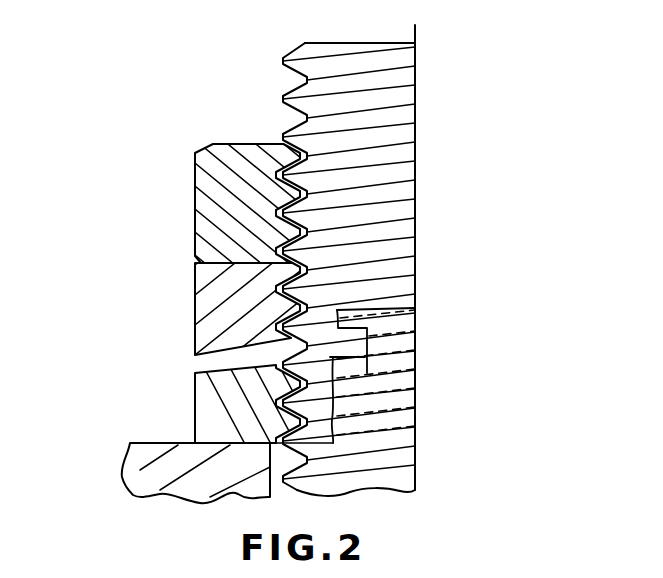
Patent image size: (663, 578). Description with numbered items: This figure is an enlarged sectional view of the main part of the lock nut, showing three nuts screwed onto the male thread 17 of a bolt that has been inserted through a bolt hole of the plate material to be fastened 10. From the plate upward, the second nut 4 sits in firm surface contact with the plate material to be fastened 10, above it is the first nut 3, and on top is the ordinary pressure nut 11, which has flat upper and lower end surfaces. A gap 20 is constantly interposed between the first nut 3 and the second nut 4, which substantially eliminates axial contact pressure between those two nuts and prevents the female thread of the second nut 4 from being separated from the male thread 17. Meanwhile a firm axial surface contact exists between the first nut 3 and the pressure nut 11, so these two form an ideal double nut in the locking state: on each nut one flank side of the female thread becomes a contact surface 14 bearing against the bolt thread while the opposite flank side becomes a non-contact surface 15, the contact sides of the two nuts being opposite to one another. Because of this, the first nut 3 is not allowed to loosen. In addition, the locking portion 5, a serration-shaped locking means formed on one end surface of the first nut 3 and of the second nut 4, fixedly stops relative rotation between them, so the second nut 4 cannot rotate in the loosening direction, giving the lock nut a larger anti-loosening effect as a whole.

The male thread 17 is at (290, 70).
The pressure nut 11 is at (194, 210).
The first nut 3 is at (194, 307).
The gap 20 is at (205, 363).
The second nut 4 is at (194, 415).
The plate material to be fastened 10 is at (160, 468).
The contact surface 14 is at (305, 177).
The non-contact surface 15 is at (305, 217).
The locking portion 5 is at (367, 339).